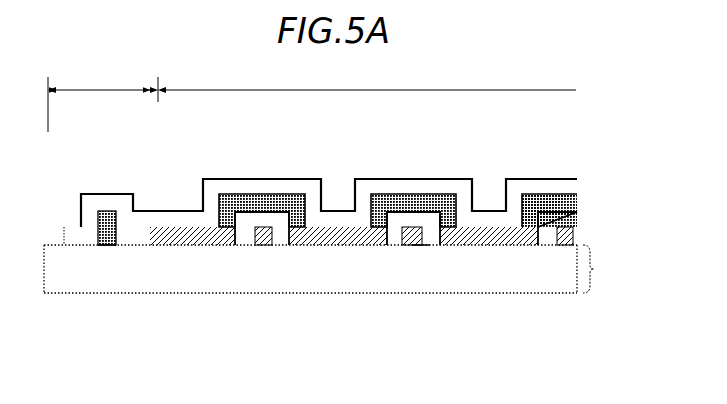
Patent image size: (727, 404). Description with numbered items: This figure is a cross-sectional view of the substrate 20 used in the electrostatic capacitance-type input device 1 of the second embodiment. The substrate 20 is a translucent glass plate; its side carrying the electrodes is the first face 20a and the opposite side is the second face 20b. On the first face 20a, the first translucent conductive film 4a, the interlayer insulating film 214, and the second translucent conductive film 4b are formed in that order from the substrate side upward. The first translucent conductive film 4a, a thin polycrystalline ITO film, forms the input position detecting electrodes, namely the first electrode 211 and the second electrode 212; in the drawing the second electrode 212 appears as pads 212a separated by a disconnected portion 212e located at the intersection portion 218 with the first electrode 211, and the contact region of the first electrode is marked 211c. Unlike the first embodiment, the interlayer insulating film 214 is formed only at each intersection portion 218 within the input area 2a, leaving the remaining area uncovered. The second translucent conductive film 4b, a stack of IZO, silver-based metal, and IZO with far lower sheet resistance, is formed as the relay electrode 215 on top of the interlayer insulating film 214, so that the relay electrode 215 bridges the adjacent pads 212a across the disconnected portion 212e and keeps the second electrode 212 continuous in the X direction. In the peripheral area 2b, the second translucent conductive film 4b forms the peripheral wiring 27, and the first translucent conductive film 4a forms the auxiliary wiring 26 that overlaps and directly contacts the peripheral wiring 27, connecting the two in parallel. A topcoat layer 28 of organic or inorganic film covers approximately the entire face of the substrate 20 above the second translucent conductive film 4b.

The electrostatic capacitance-type input device 1 is at (523, 139).
The input area 2a is at (367, 78).
The peripheral area 2b is at (103, 97).
The first translucent conductive film 4a is at (506, 245).
The second translucent conductive film 4b is at (266, 200).
The substrate 20 is at (332, 296).
The first face 20a is at (245, 245).
The second face 20b is at (171, 296).
The auxiliary wiring 26 is at (103, 245).
The peripheral wiring 27 is at (108, 224).
The topcoat layer 28 is at (549, 185).
The first electrode 211 is at (414, 310).
The first electrode contact portion 211c is at (394, 242).
The second electrode 212 is at (398, 290).
The pad 212a is at (398, 285).
The disconnected portion 212e is at (420, 252).
The interlayer insulating film 214 is at (243, 217).
The relay electrode 215 is at (398, 176).
The intersection portion 218 is at (477, 315).